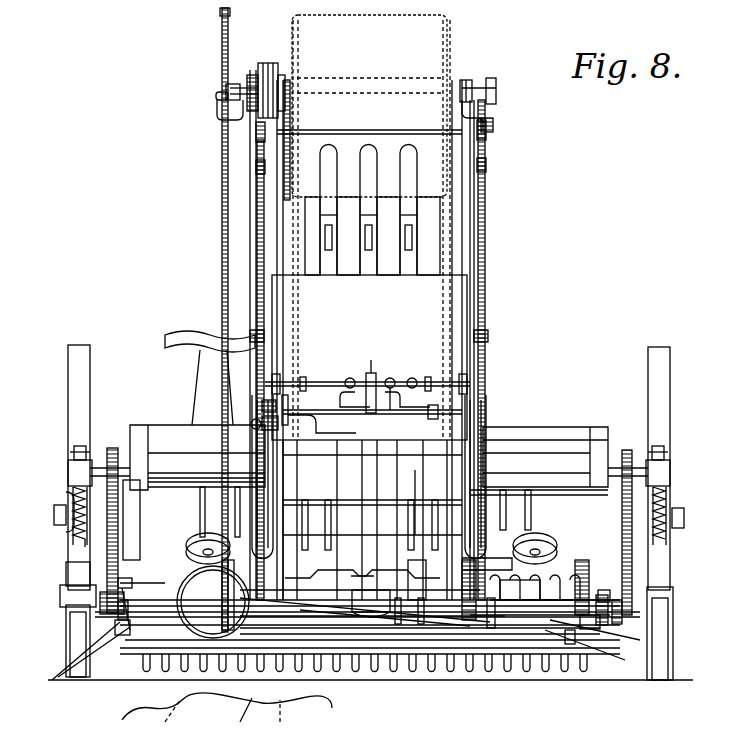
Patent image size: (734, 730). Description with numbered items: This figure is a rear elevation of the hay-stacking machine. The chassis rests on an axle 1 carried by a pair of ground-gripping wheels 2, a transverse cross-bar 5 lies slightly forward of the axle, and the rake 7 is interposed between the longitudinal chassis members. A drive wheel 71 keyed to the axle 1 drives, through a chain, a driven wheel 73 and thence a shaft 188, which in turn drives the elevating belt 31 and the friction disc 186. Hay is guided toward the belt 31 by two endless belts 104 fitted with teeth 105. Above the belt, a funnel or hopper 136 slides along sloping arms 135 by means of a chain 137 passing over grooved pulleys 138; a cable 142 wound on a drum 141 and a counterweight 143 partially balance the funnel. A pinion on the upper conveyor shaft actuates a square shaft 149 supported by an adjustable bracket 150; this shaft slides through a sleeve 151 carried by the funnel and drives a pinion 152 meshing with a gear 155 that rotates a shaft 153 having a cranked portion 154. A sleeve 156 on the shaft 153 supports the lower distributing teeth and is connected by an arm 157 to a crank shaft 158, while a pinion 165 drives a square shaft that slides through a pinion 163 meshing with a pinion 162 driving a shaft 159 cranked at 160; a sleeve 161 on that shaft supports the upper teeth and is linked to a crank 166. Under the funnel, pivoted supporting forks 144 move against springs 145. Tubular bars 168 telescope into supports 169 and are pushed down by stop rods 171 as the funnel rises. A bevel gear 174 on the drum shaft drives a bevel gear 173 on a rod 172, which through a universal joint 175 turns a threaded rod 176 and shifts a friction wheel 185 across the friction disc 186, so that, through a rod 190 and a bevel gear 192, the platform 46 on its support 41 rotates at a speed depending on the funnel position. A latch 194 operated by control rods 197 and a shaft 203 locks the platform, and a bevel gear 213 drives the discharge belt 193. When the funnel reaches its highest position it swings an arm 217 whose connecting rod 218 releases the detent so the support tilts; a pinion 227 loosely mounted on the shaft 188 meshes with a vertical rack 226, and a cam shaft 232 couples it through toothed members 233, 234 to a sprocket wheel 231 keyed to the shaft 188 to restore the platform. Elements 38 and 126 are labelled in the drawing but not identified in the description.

The drum 38 is at (428, 37).
The arm 217 is at (455, 197).
The endless belt 31 is at (370, 238).
The rod 172 is at (224, 285).
The bevel gear 174 is at (230, 86).
The drum 141 is at (267, 63).
The bevel gear 173 is at (222, 96).
The cable 142 is at (240, 122).
The rods 171 is at (256, 148).
The counterweight 143 is at (260, 196).
The chain 137 is at (250, 250).
The arm 135 is at (275, 224).
The bracket 150 is at (493, 118).
The square shaft 149 is at (484, 190).
The grooved pulleys 138 is at (488, 336).
The pinion 163 is at (258, 425).
The funnel 136 is at (305, 306).
The springs 145 is at (314, 382).
The crank 166 is at (372, 372).
The cranked portion 160 is at (390, 378).
The sleeve 161 is at (362, 390).
The shaft 159 is at (416, 392).
The crank shaft 158 is at (440, 410).
The supporting forks 144 is at (290, 418).
The pinion 162 is at (268, 420).
The tubular supporting bars 168 is at (264, 446).
The tubular supports 169 is at (290, 520).
The teeth 105 is at (193, 478).
The cross-bar 5 is at (572, 440).
The arm 157 is at (470, 482).
The endless belts 104 is at (200, 540).
The universal joint 175 is at (213, 602).
The friction wheel 185 is at (222, 600).
The wheels 2 is at (83, 368).
The drive wheel 71 is at (105, 558).
The axle 1 is at (58, 515).
The driven wheel 73 is at (100, 604).
The wheel 126 is at (80, 650).
The shaft 203 is at (135, 578).
The platform support 41 is at (120, 628).
The control rods 197 is at (87, 662).
The latch 194 is at (122, 640).
The platform 46 is at (160, 640).
The pinion 165 is at (278, 655).
The friction disc 186 is at (210, 640).
The threaded rod 176 is at (245, 640).
The rake 7 is at (302, 636).
The sleeve 156 is at (326, 640).
The rod 190 is at (360, 614).
The bevel gear 192 is at (366, 630).
The bevel gear 213 is at (410, 640).
The cranked portion 154 is at (398, 640).
The shaft 153 is at (425, 640).
The endless belt 193 is at (418, 640).
The gear 155 is at (468, 625).
The sleeve 151 is at (492, 640).
The shaft 188 is at (520, 640).
The pinion 152 is at (553, 640).
The rack 226 is at (590, 590).
The sprocket wheel 231 is at (645, 612).
The toothed member 234 is at (598, 636).
The toothed member 233 is at (612, 645).
The pinion 227 is at (598, 650).
The cam shaft 232 is at (572, 646).
The connecting rod 218 is at (124, 718).